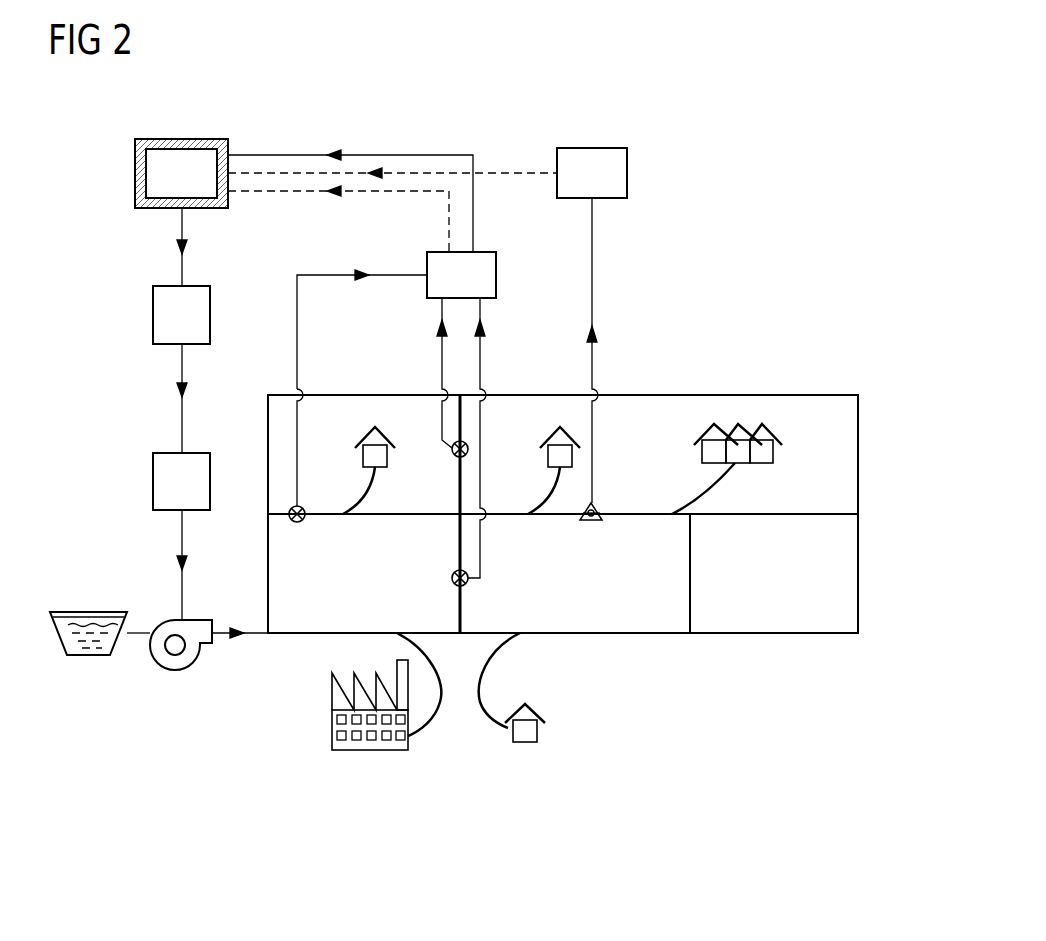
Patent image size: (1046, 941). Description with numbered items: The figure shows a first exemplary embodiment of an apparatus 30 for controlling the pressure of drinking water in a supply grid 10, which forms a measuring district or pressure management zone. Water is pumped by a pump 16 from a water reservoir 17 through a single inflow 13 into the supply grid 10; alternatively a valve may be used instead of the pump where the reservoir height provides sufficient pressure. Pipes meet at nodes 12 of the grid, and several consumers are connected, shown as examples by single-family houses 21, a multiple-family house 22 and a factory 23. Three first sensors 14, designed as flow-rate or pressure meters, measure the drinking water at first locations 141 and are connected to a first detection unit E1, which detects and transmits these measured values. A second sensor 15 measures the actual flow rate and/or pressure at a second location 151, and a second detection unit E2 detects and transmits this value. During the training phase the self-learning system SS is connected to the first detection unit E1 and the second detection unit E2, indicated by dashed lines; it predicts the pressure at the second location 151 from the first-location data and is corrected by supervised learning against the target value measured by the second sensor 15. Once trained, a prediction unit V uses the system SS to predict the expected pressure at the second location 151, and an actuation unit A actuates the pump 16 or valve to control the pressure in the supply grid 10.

The supply grid 10 is at (895, 455).
The node 12 is at (858, 513).
The inflow 13 is at (219, 637).
The first sensor 14 is at (456, 457).
The first location 141 is at (452, 447).
The second sensor 15 is at (592, 526).
The second location 151 is at (598, 510).
The pump 16 is at (200, 620).
The water reservoir 17 is at (89, 612).
The single-family house 21 is at (358, 452).
The multiple-family house 22 is at (776, 452).
The factory 23 is at (370, 751).
The apparatus 30 is at (127, 247).
The self-learning system SS is at (181, 138).
The prediction unit V is at (153, 316).
The actuation unit A is at (153, 482).
The first detection unit E1 is at (496, 278).
The second detection unit E2 is at (627, 173).